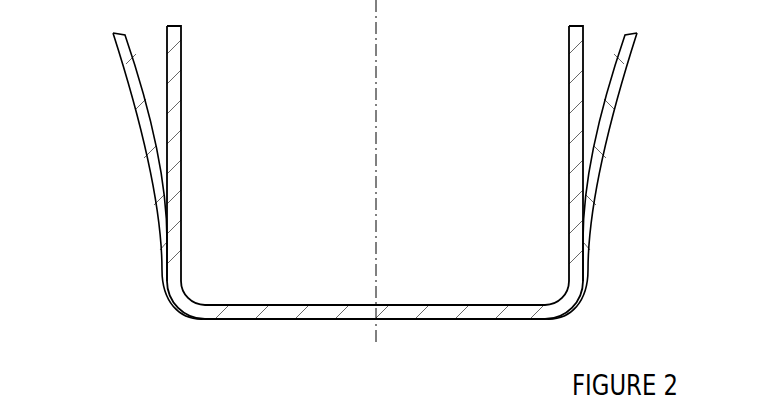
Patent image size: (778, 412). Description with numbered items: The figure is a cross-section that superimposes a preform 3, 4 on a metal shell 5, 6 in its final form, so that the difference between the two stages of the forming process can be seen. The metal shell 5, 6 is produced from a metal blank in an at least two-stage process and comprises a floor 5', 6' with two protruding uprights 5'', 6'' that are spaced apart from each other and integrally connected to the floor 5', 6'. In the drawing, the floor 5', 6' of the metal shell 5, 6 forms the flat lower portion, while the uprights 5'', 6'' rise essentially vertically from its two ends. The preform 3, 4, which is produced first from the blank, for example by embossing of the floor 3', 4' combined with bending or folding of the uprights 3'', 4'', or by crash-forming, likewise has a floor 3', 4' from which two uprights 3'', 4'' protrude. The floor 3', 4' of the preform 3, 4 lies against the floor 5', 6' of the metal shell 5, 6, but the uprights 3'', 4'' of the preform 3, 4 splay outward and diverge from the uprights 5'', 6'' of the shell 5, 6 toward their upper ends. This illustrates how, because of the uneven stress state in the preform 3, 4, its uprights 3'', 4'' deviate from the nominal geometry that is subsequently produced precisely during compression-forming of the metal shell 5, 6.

The preform 3 is at (398, 176).
The preform 4 is at (398, 176).
The first metal shell 5 is at (375, 153).
The second metal shell 6 is at (375, 153).
The floor 3' is at (375, 276).
The floor 4' is at (375, 276).
The floor 5' is at (375, 276).
The floor 6' is at (375, 276).
The uprights 3'' is at (398, 176).
The uprights 4'' is at (398, 176).
The uprights 5'' is at (375, 153).
The uprights 6'' is at (375, 153).